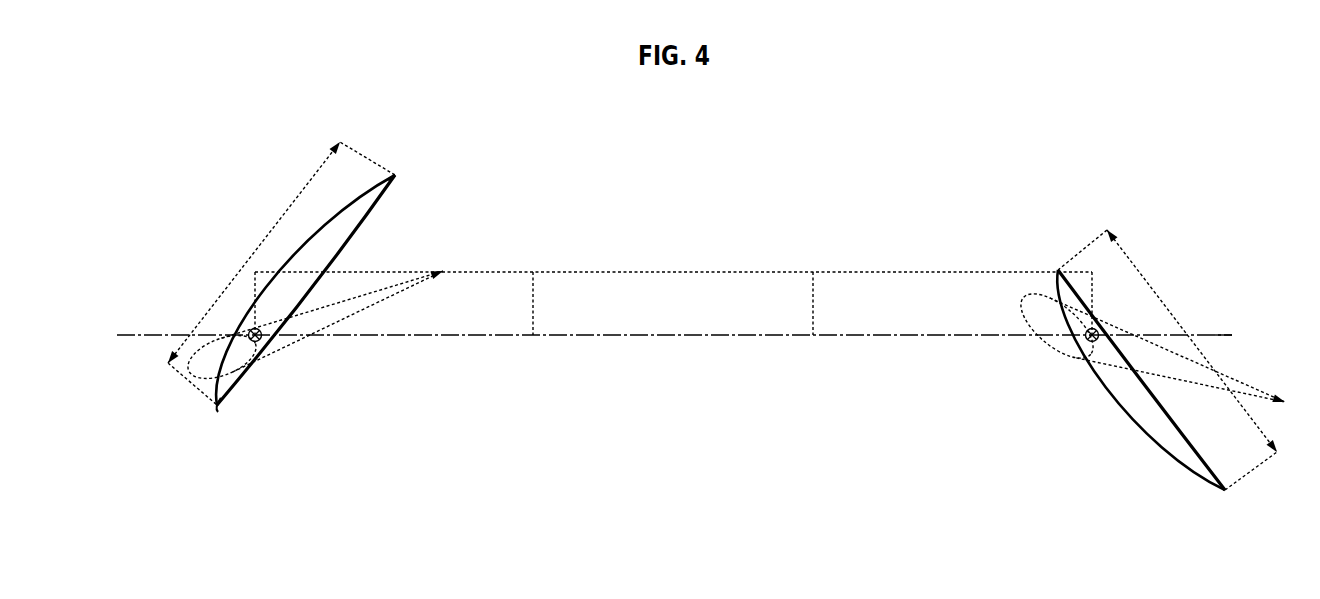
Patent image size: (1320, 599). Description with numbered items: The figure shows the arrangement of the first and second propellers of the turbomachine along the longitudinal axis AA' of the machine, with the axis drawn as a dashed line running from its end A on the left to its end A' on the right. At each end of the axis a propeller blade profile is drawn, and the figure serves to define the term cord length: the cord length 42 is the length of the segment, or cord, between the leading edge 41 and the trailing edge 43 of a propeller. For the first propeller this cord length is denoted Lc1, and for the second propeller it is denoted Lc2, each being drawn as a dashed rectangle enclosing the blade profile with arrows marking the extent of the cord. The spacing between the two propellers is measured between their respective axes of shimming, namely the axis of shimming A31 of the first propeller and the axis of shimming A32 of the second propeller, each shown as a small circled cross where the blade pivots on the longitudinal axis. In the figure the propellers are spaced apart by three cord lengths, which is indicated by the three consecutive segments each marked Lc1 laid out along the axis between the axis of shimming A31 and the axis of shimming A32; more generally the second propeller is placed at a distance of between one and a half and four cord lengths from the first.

The leading edge 41 is at (213, 410).
The cord length 42 is at (323, 253).
The trailing edge 43 is at (397, 175).
The longitudinal axis end A is at (674, 302).
The longitudinal axis end A' is at (1230, 302).
The axis of shimming of the first propeller A31 is at (260, 347).
The axis of shimming of the second propeller A32 is at (1083, 353).
The cord length of the first propeller Lc1 is at (973, 227).
The cord length of the second propeller Lc2 is at (1152, 290).